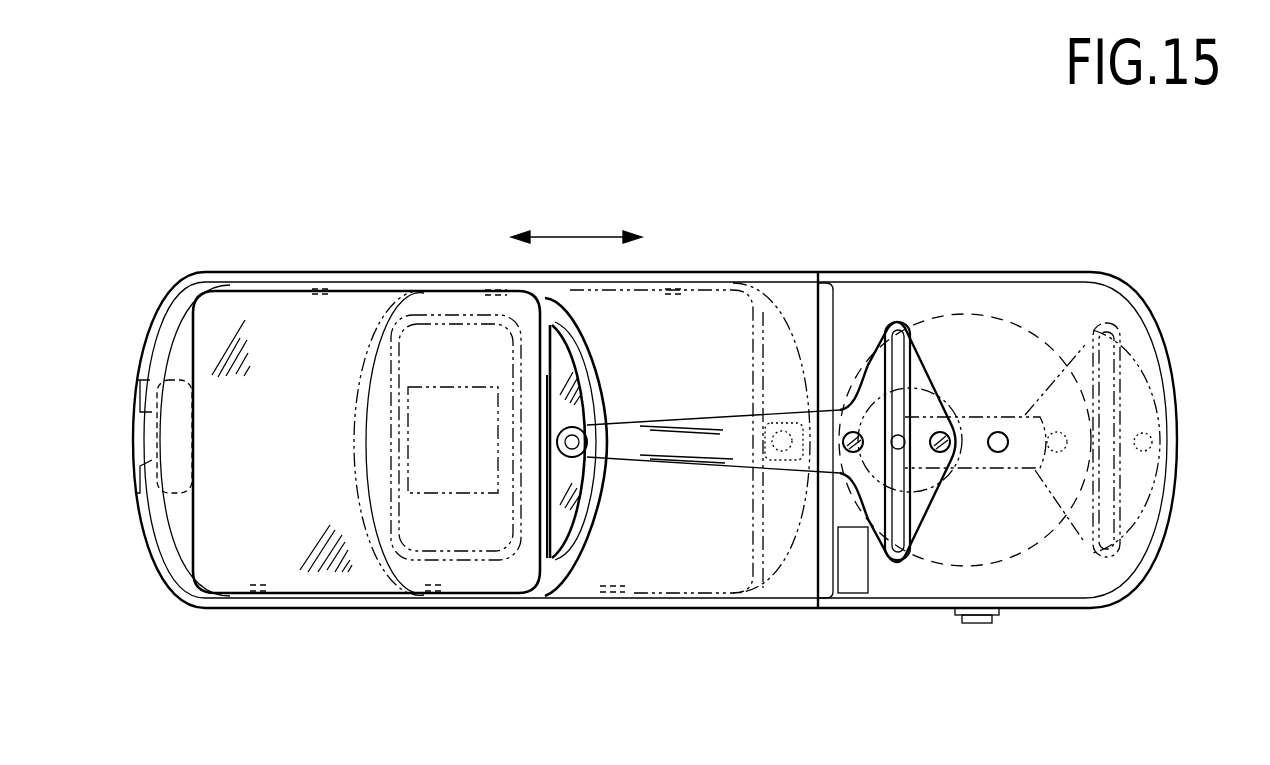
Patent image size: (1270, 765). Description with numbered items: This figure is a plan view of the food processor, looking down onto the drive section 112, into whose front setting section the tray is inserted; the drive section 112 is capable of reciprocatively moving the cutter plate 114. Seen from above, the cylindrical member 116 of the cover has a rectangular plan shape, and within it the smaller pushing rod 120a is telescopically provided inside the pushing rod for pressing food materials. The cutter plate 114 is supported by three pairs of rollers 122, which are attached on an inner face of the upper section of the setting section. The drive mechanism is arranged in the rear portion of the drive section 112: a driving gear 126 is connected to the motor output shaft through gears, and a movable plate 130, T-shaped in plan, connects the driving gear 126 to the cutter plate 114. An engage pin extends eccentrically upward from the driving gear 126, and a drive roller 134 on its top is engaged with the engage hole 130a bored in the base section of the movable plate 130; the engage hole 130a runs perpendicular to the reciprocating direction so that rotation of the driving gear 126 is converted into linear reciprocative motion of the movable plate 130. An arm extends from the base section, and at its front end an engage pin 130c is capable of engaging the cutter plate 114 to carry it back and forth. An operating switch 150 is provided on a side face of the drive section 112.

The drive section 112 is at (913, 276).
The cutter plate 114 is at (323, 578).
The cylindrical member 116 is at (480, 560).
The smaller pushing rod 120a is at (430, 497).
The rollers 122 is at (677, 277).
The driving gear 126 is at (1048, 550).
The movable plate 130 is at (723, 457).
The engage hole 130a is at (915, 348).
The engage pin 130c is at (578, 462).
The drive roller 134 is at (905, 438).
The operating switch 150 is at (970, 620).